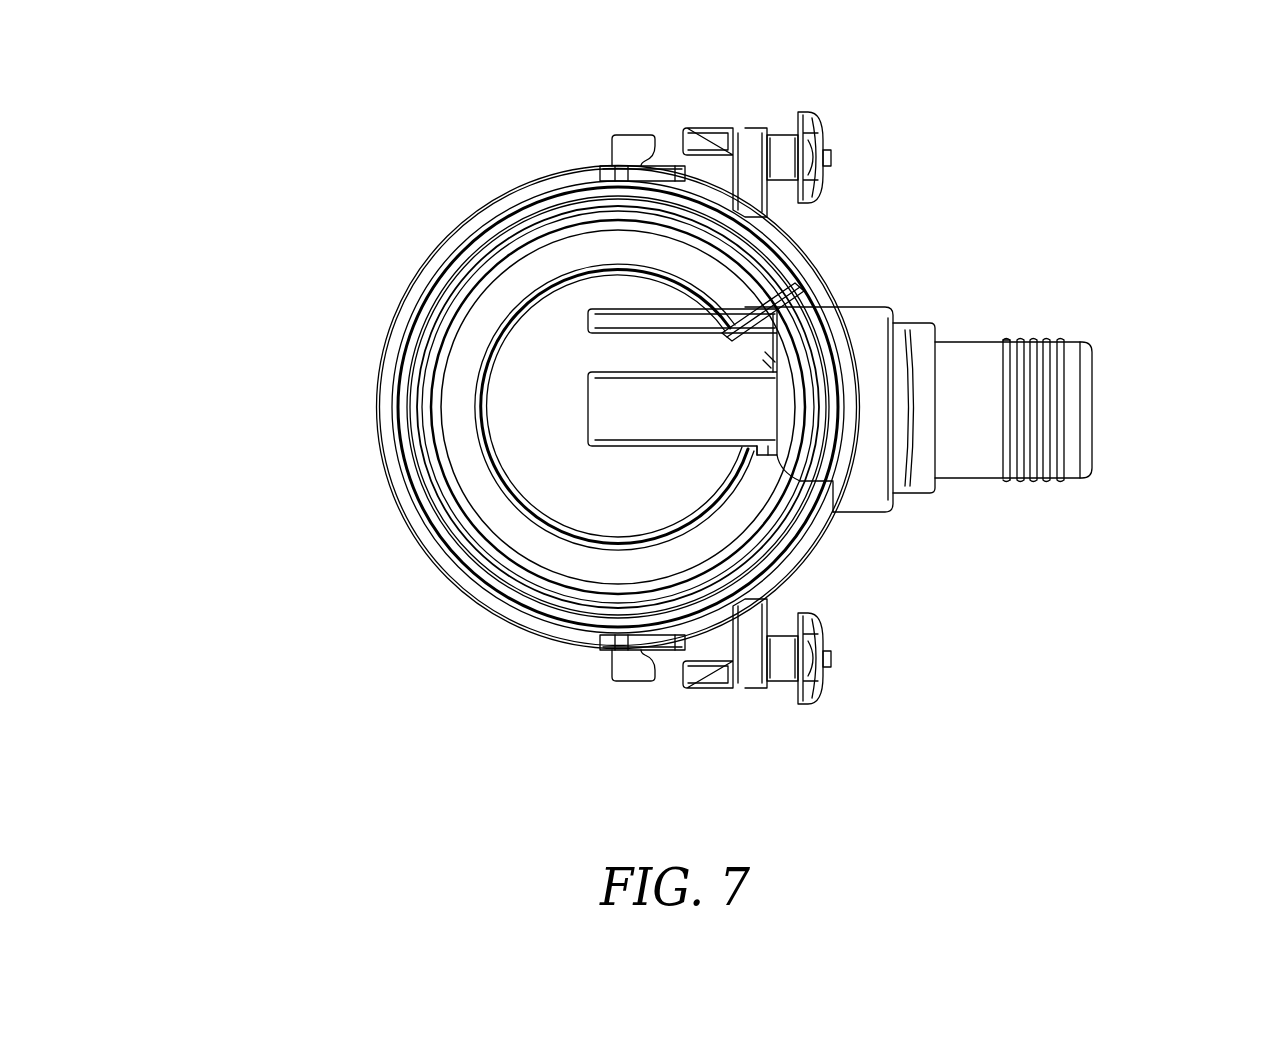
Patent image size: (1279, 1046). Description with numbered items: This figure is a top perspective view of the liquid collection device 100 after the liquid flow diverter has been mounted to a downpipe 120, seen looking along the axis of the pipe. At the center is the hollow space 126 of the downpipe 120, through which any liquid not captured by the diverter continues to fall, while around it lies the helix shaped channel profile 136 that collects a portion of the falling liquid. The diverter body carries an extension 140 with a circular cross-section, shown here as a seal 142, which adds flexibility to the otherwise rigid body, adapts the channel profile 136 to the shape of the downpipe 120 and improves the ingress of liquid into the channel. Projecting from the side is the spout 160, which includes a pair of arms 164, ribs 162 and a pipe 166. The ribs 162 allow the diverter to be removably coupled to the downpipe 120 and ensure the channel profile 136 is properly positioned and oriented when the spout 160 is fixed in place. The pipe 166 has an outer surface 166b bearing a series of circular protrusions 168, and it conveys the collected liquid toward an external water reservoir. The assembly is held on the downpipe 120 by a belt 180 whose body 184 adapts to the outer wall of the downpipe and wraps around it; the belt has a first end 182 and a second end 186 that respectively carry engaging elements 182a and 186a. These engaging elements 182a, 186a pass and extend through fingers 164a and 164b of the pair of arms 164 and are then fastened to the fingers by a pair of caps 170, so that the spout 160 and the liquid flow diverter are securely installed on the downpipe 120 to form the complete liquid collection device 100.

The liquid collection device 100 is at (300, 124).
The downpipe 120 is at (500, 606).
The hollow space 126 is at (577, 479).
The channel profile 136 is at (480, 320).
The extension 140 is at (412, 425).
The seal 142 is at (410, 455).
The spout 160 is at (1128, 406).
The ribs 162 is at (611, 397).
The pair of arms 164 is at (806, 258).
The finger 164a is at (722, 132).
The finger 164b is at (716, 664).
The pipe 166 is at (981, 358).
The outer surface 166b is at (976, 459).
The circular protrusions 168 is at (1056, 481).
The caps 170 is at (827, 160).
The belt 180 is at (404, 538).
The first end 182 is at (663, 113).
The engaging element 182a is at (700, 150).
The body 184 is at (376, 377).
The second end 186 is at (662, 696).
The engaging element 186a is at (722, 683).